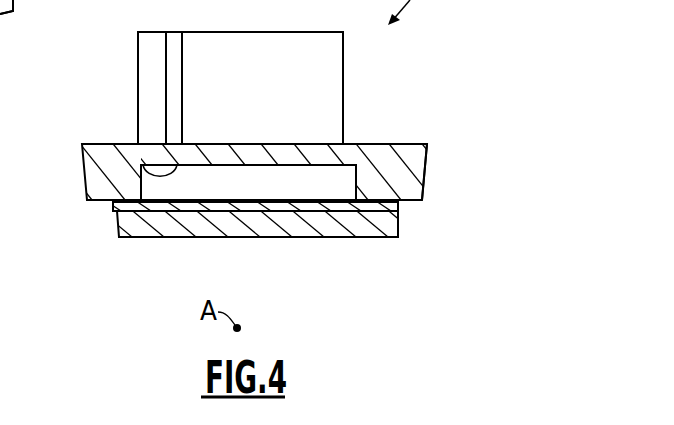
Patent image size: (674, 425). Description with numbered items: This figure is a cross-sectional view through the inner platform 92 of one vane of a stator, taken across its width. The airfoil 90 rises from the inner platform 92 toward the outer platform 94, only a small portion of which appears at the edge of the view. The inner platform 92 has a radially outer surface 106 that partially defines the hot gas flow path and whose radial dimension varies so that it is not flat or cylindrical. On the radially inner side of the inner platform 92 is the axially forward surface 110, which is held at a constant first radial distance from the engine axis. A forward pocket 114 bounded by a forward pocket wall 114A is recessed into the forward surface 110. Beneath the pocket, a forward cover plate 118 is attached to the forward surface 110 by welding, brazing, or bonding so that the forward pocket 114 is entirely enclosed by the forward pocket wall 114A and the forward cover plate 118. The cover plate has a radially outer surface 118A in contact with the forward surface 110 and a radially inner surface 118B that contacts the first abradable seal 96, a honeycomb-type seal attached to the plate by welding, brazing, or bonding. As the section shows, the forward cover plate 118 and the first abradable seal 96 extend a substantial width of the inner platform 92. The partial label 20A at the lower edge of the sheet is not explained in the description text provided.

The airfoil 90 is at (255, 103).
The inner platform 92 is at (417, 187).
The outer platform 94 is at (0, 55).
The first abradable annular seal 96 is at (372, 237).
The radially outer surface 106 is at (426, 144).
The axially forward surface 110 is at (413, 202).
The forward pocket 114 is at (337, 173).
The forward pocket wall 114A is at (142, 164).
The forward cover plate 118 is at (132, 207).
The radially outer surface of forward cover plate 118A is at (139, 182).
The radially inner surface of forward cover plate 118B is at (138, 212).
The assembly (partial label) 20A is at (25, 414).